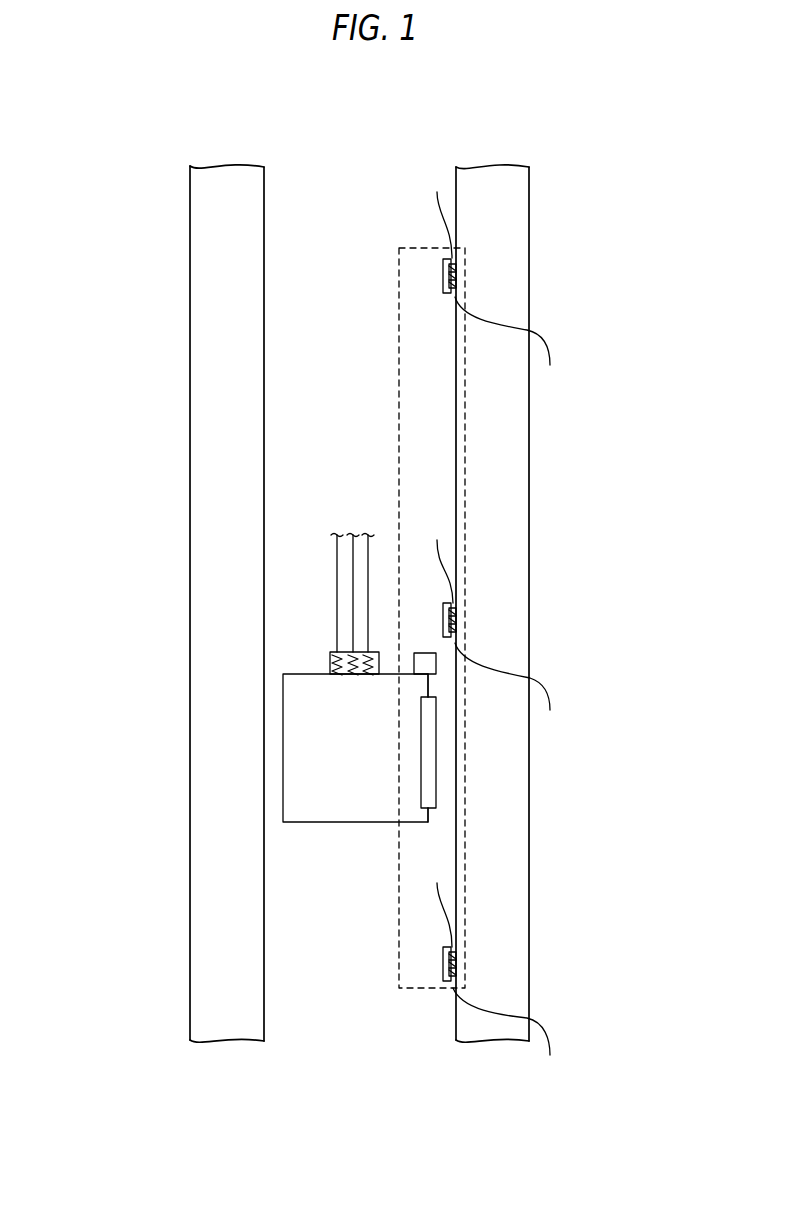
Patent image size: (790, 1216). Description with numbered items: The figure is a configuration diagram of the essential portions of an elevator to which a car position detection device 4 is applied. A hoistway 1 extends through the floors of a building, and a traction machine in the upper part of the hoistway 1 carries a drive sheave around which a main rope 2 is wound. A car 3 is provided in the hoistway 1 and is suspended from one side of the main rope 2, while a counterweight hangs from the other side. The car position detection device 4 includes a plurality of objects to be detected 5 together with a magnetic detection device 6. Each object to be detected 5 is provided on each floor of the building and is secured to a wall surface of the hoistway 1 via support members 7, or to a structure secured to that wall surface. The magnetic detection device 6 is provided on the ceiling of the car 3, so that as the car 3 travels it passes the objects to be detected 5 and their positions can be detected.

The hoistway 1 is at (275, 843).
The main rope 2 is at (336, 580).
The car 3 is at (350, 795).
The car position detection device 4 is at (465, 597).
The object to be detected 5 is at (443, 276).
The magnetic detection device 6 is at (425, 652).
The support member 7 is at (494, 626).